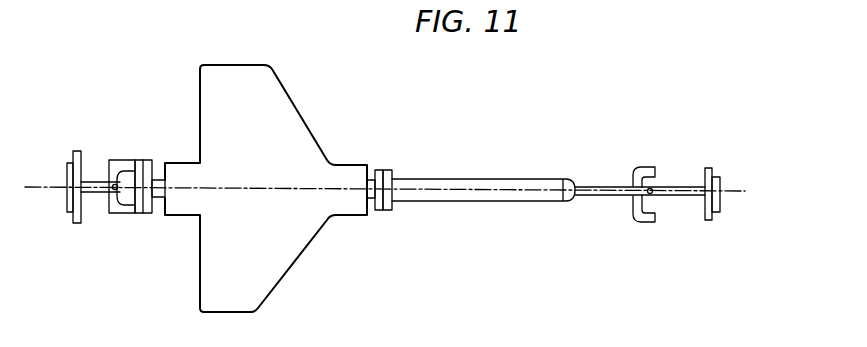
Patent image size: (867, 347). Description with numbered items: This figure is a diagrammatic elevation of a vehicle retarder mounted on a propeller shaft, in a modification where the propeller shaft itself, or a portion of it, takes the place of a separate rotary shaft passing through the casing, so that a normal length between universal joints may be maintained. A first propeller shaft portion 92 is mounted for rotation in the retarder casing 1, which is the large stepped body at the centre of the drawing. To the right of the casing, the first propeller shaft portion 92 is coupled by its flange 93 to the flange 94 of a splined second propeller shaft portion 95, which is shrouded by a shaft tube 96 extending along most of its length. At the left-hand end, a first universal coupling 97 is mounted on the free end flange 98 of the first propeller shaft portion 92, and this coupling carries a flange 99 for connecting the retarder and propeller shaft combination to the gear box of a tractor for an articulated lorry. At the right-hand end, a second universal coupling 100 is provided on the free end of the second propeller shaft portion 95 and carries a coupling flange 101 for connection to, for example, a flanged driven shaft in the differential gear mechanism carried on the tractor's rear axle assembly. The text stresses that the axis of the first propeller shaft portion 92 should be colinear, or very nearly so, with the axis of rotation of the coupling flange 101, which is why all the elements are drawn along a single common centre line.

The retarder casing 1 is at (304, 102).
The first propeller shaft portion 92 is at (158, 180).
The flange 93 is at (378, 172).
The flange 94 is at (392, 172).
The second propeller shaft portion 95 is at (597, 183).
The shaft tube 96 is at (484, 181).
The first universal coupling 97 is at (117, 162).
The free end flange 98 is at (142, 162).
The flange 99 is at (64, 172).
The second universal coupling 100 is at (655, 170).
The coupling flange 101 is at (722, 181).